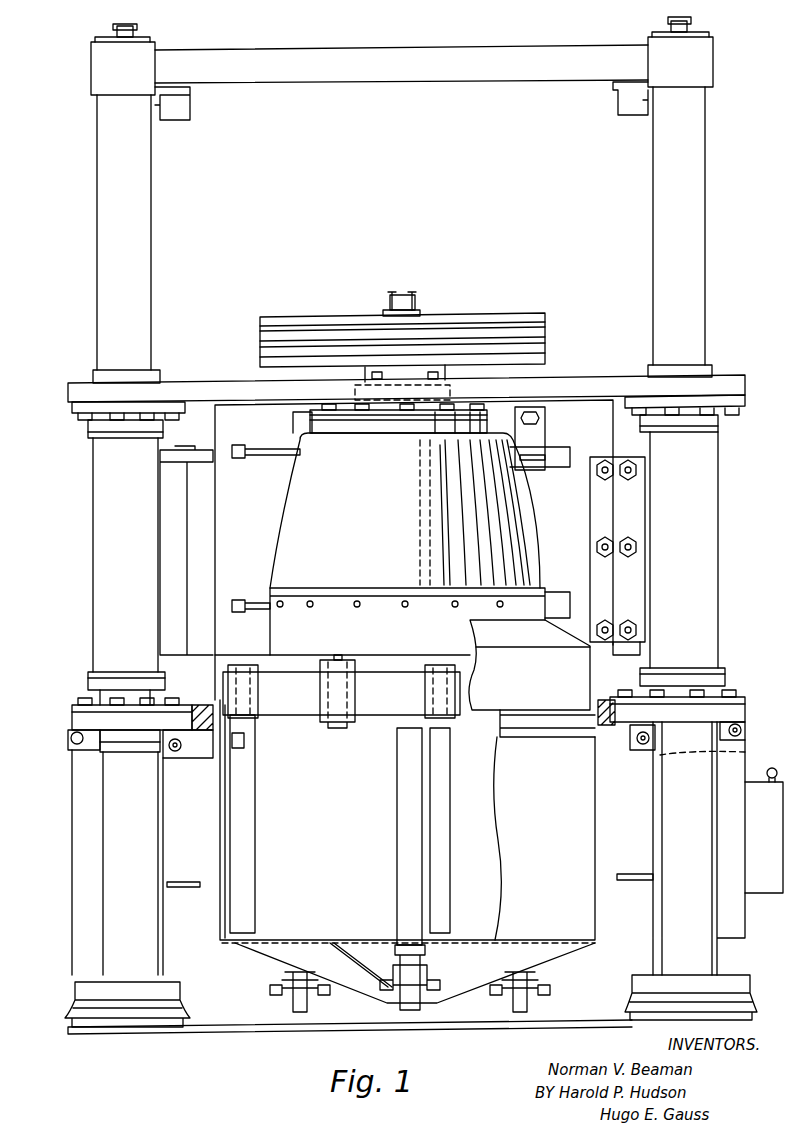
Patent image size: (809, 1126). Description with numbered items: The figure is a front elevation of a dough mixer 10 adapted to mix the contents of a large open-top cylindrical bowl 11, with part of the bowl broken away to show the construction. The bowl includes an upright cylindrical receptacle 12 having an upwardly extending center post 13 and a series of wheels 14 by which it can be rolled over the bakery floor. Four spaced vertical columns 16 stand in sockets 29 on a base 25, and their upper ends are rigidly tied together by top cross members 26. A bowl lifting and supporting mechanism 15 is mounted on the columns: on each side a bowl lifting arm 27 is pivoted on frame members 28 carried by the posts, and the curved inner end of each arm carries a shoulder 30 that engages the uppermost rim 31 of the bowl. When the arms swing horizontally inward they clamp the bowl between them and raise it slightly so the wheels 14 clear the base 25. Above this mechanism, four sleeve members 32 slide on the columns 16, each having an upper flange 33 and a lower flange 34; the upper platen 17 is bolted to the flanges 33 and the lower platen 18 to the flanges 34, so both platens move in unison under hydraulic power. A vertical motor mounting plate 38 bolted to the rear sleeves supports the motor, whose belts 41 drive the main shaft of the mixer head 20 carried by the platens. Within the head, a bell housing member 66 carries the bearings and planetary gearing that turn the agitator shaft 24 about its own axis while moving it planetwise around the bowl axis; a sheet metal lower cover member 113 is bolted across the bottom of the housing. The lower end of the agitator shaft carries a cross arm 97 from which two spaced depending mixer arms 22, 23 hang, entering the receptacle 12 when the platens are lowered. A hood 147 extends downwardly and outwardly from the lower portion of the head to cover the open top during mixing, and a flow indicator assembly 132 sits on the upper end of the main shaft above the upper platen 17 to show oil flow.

The mixer 10 is at (108, 488).
The bowl 11 is at (570, 870).
The receptacle 12 is at (536, 838).
The center post 13 is at (410, 800).
The wheels 14 is at (293, 1000).
The bowl lifting and supporting mechanism 15 is at (608, 751).
The vertical columns 16 is at (140, 240).
The upper platen 17 is at (566, 380).
The lower platen 18 is at (115, 718).
The mixer head 20 is at (326, 497).
The mixer arm 22 is at (245, 870).
The mixer arm 23 is at (445, 808).
The agitator shaft 24 is at (352, 660).
The base 25 is at (262, 1030).
The top cross members 26 is at (437, 46).
The bowl lifting arm 27 is at (200, 758).
The frame members 28 is at (175, 762).
The sockets 29 is at (100, 992).
The shoulder 30 is at (237, 737).
The rim 31 is at (537, 732).
The sleeve members 32 is at (103, 585).
The upper flanges 33 is at (80, 405).
The lower flanges 34 is at (78, 705).
The motor mounting plate 38 is at (243, 418).
The belts 41 is at (474, 330).
The bell housing member 66 is at (500, 541).
The cross arm 97 is at (377, 700).
The lower cover member 113 is at (392, 621).
The flow indicator assembly 132 is at (418, 296).
The hood 147 is at (529, 665).